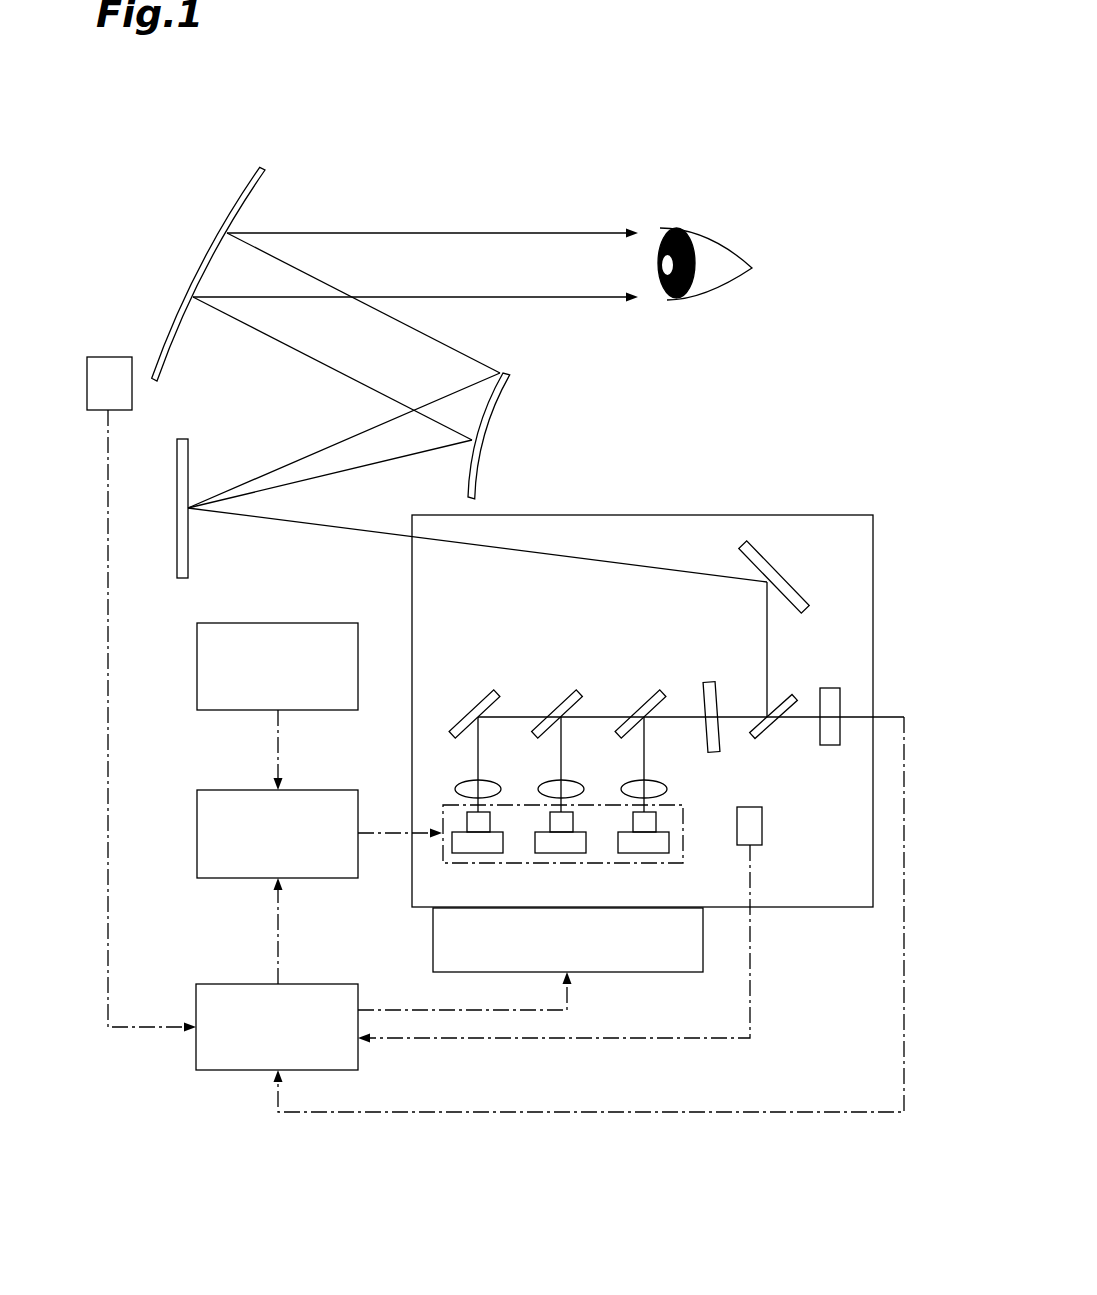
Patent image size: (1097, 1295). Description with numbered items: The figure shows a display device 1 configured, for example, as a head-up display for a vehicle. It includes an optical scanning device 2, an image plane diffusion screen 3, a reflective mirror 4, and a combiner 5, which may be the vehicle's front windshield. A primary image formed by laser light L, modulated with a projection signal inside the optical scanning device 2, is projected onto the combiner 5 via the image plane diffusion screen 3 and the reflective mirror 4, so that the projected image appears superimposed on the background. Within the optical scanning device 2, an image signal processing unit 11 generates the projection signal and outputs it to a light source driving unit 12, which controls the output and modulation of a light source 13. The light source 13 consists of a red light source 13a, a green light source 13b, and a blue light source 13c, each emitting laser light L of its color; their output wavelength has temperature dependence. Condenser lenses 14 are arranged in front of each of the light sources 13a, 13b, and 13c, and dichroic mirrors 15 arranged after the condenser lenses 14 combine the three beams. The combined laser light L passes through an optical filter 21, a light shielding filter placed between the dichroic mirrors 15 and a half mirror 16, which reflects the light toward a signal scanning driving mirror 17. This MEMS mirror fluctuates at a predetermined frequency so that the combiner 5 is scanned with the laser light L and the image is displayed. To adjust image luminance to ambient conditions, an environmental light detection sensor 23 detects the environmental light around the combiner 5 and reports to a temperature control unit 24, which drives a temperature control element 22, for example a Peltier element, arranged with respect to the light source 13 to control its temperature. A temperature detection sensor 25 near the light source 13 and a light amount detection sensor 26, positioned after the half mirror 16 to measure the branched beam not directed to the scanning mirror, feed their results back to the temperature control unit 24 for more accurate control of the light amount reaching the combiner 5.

The display device 1 is at (135, 141).
The optical scanning device 2 is at (834, 510).
The image plane diffusion screen 3 is at (184, 438).
The reflective mirror 4 is at (490, 422).
The combiner 5 is at (246, 188).
The image signal processing unit 11 is at (335, 623).
The light source driving unit 12 is at (333, 790).
The light source 13 is at (690, 810).
The light source (red) 13a is at (490, 820).
The light source (green) 13b is at (573, 820).
The light source (blue) 13c is at (657, 820).
The condenser lens 14 is at (487, 782).
The dichroic mirror 15 is at (490, 695).
The half mirror 16 is at (771, 726).
The signal scanning driving mirror 17 is at (805, 588).
The optical filter 21 is at (712, 682).
The temperature control element 22 is at (672, 975).
The environmental light detection sensor 23 is at (102, 357).
The temperature control unit 24 is at (334, 984).
The temperature detection sensor 25 is at (763, 828).
The light amount detection sensor 26 is at (830, 688).
The laser light L is at (268, 520).